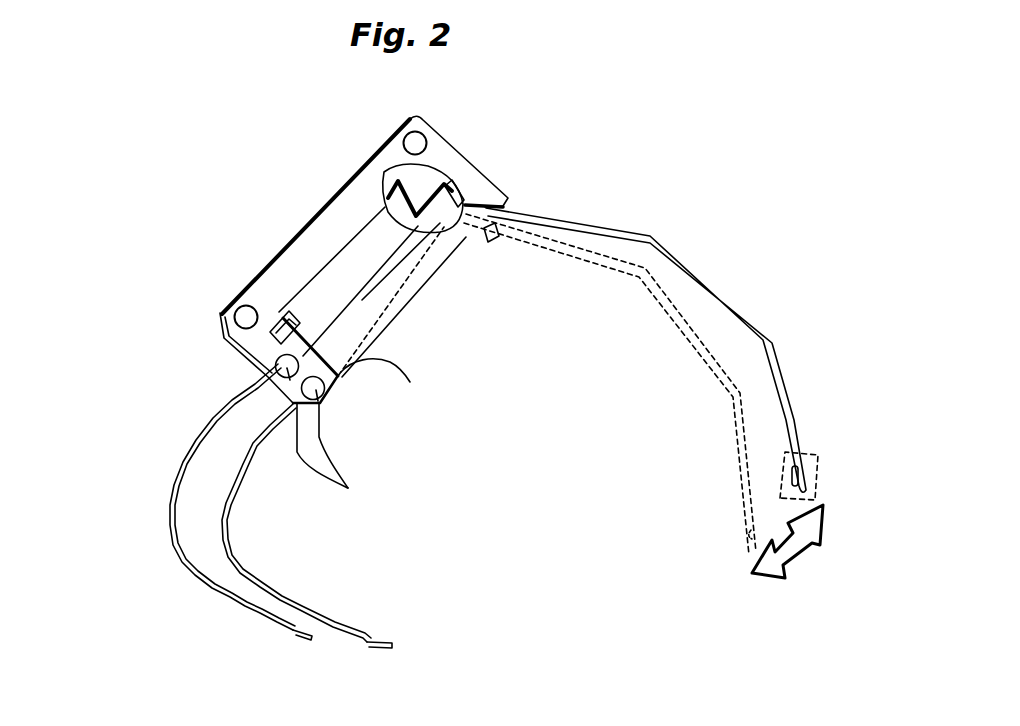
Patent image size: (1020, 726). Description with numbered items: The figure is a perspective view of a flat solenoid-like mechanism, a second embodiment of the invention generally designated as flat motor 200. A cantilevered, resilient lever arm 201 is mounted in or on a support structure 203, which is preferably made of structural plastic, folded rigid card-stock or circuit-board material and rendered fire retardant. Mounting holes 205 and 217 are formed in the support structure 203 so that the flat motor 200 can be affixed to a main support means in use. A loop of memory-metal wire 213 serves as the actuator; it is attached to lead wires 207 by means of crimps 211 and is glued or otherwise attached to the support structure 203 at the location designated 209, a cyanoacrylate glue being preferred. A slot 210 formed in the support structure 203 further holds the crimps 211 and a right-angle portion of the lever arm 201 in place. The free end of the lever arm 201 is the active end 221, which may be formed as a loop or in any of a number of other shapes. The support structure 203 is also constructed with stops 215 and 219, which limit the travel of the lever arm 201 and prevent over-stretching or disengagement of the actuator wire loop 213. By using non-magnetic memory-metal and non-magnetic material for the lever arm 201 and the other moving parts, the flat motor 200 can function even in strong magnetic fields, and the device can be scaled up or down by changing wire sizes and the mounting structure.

The flat motor 200 is at (178, 131).
The lever arm 201 is at (382, 183).
The support structure 203 is at (313, 245).
The mounting hole 205 is at (246, 317).
The lead wires 207 is at (222, 520).
The glue attachment point 209 is at (348, 488).
The slot 210 is at (341, 385).
The crimps 211 is at (310, 344).
The memory-metal loop 213 is at (362, 298).
The stop 215 is at (456, 232).
The mounting hole 217 is at (414, 141).
The stop 219 is at (483, 207).
The active end 221 is at (824, 465).